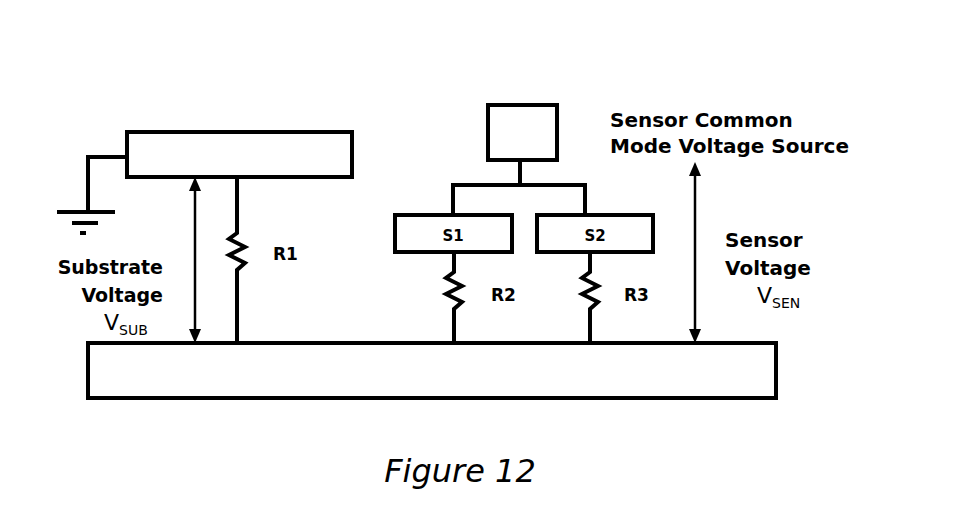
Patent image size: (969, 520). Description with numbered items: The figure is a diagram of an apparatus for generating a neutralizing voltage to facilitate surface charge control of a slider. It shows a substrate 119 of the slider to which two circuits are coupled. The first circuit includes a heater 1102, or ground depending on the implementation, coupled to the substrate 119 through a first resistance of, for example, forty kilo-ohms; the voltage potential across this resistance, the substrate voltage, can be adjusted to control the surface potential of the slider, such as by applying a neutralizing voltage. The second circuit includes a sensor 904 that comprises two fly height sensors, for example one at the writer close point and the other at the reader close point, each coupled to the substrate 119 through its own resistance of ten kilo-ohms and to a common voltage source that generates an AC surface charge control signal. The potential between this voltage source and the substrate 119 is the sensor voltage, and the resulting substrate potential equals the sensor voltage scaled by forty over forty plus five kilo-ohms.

The sensor 904 is at (470, 90).
The heater 1102 is at (352, 158).
The substrate 119 is at (776, 366).